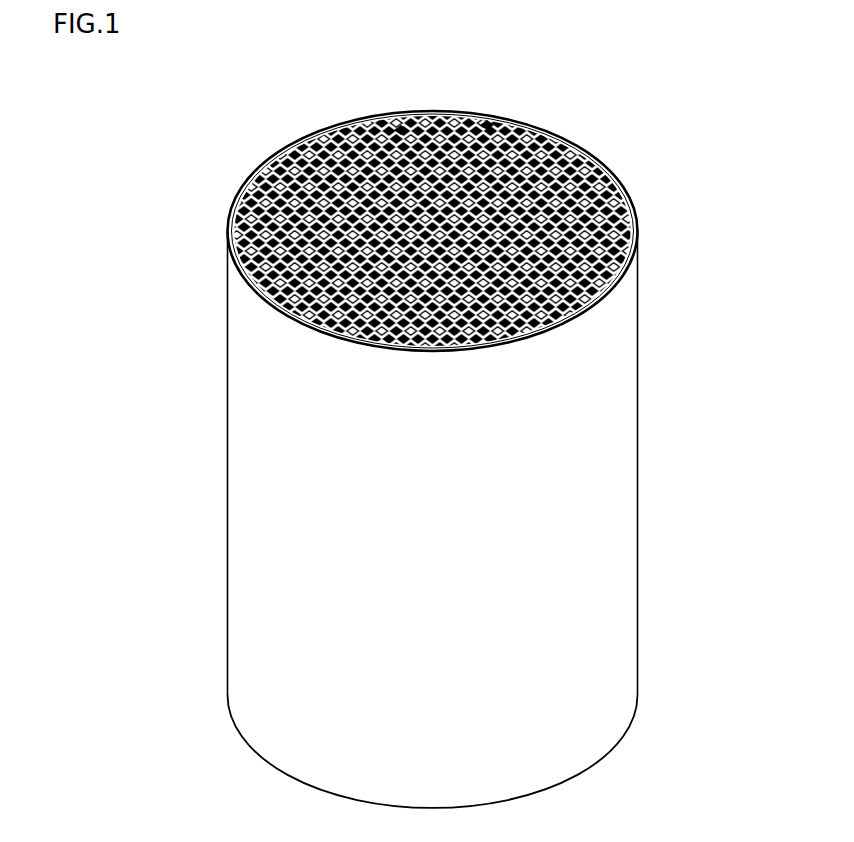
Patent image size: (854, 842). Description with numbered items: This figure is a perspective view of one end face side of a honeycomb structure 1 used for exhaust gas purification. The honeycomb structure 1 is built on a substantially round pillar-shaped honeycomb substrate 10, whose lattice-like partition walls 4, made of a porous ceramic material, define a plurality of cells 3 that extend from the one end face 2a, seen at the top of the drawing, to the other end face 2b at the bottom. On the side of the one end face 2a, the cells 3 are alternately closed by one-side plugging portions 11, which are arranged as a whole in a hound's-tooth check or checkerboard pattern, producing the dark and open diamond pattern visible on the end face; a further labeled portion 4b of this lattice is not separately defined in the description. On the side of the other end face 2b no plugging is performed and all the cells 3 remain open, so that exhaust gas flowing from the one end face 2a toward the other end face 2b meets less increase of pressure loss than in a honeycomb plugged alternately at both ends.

The honeycomb structure 1 is at (140, 305).
The honeycomb substrate 10 is at (617, 473).
The one end face 2a is at (622, 197).
The other end face 2b is at (603, 758).
The cell 3 is at (573, 142).
The partition wall 4 is at (487, 125).
The plugging portion 4b is at (401, 134).
The one-side plugging portion 11 is at (638, 263).